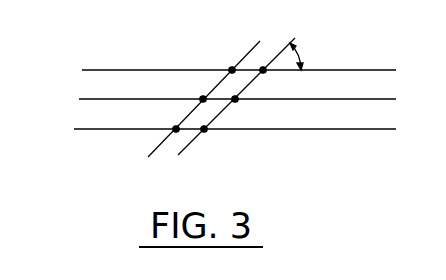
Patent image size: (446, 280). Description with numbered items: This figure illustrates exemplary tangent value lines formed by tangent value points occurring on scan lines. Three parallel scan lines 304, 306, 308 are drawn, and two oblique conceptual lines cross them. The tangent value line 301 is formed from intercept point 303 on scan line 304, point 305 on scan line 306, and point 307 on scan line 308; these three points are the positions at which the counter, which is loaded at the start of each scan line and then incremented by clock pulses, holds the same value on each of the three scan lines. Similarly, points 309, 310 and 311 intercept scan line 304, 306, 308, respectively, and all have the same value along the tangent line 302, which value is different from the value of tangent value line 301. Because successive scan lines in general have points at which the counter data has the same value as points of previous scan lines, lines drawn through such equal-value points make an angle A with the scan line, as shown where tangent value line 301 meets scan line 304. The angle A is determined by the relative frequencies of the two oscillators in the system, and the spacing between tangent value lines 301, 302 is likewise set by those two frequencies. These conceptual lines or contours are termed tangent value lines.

The tangent value line 301 is at (281, 42).
The tangent value line 302 is at (252, 47).
The intercept point 303 is at (267, 73).
The scan line 304 is at (98, 70).
The intercept point 305 is at (236, 100).
The scan line 306 is at (85, 98).
The intercept point 307 is at (206, 131).
The scan line 308 is at (84, 129).
The intercept point 309 is at (232, 70).
The intercept point 310 is at (203, 99).
The intercept point 311 is at (176, 129).
The angle A is at (304, 54).